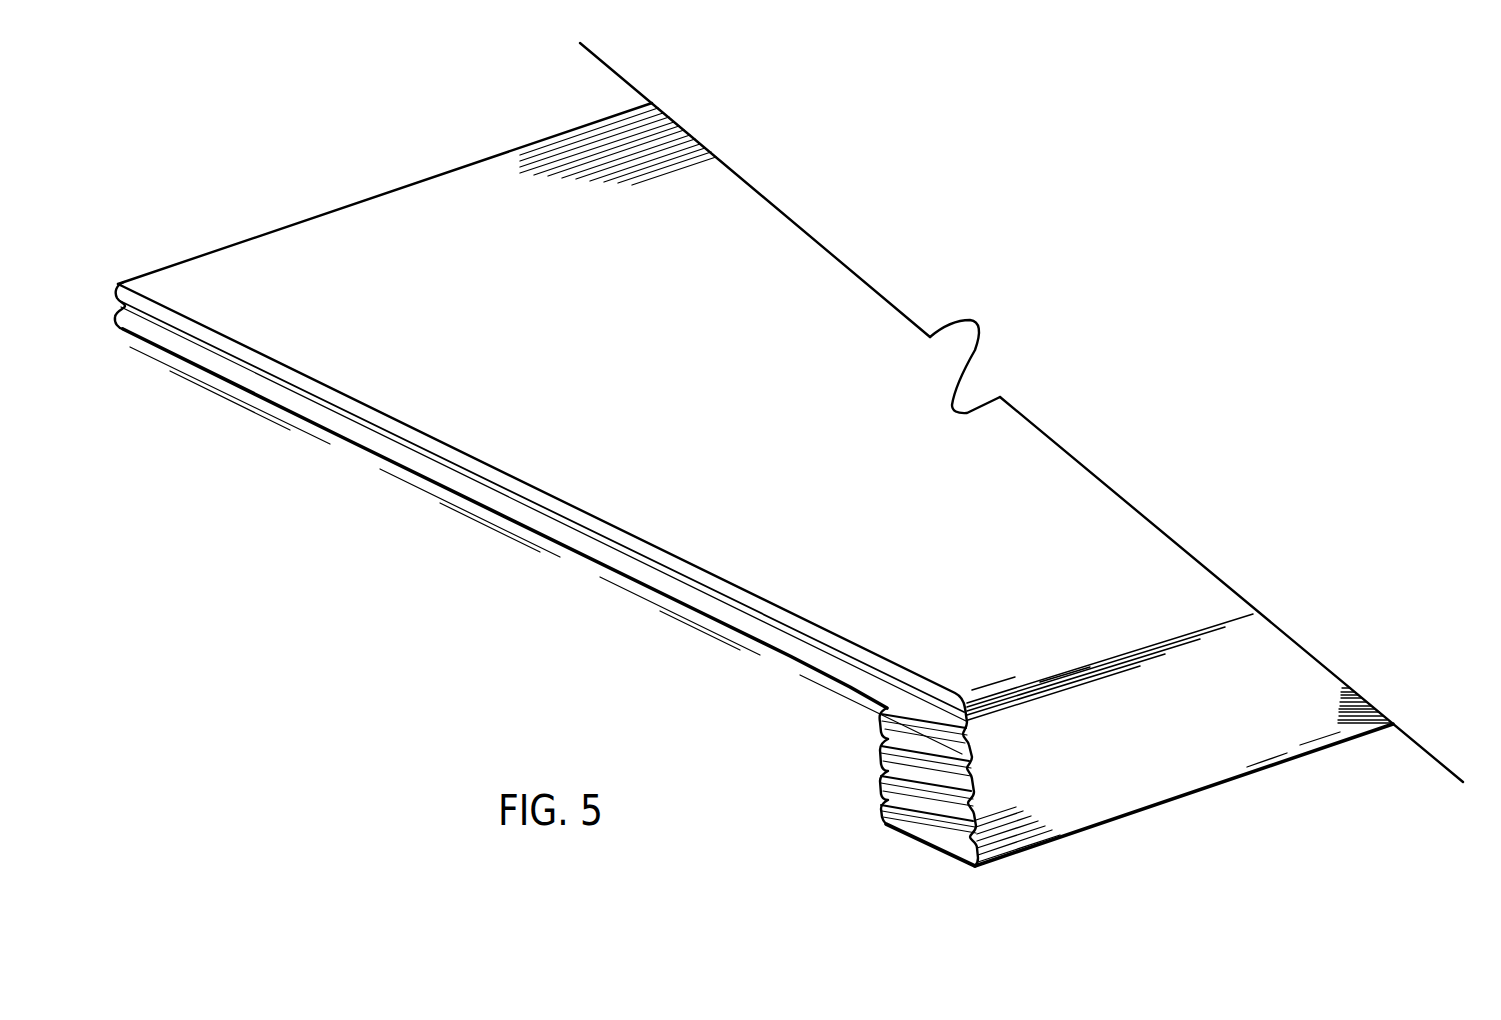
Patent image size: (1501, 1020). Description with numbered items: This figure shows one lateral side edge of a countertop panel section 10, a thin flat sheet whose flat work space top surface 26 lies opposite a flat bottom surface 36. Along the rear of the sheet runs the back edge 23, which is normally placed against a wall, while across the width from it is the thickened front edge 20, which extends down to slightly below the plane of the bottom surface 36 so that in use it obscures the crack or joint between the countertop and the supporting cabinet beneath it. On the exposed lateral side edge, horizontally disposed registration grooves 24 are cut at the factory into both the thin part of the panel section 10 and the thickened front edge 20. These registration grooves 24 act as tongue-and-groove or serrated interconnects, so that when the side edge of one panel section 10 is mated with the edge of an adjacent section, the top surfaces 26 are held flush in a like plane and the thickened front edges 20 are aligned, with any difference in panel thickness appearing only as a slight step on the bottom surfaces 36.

The panel section 10 is at (338, 200).
The thickened front edge 20 is at (1230, 713).
The back edge 23 is at (205, 252).
The registration grooves 24 is at (258, 368).
The top surface 26 is at (530, 215).
The bottom surface 36 is at (513, 522).